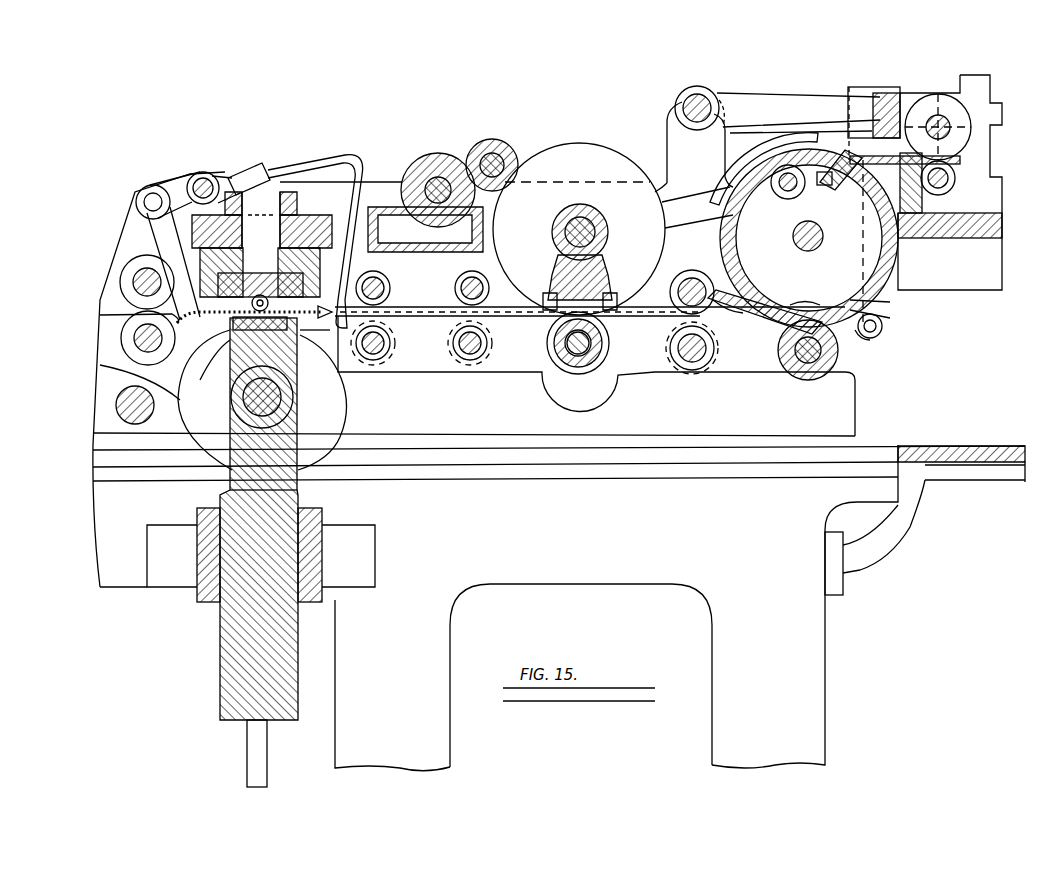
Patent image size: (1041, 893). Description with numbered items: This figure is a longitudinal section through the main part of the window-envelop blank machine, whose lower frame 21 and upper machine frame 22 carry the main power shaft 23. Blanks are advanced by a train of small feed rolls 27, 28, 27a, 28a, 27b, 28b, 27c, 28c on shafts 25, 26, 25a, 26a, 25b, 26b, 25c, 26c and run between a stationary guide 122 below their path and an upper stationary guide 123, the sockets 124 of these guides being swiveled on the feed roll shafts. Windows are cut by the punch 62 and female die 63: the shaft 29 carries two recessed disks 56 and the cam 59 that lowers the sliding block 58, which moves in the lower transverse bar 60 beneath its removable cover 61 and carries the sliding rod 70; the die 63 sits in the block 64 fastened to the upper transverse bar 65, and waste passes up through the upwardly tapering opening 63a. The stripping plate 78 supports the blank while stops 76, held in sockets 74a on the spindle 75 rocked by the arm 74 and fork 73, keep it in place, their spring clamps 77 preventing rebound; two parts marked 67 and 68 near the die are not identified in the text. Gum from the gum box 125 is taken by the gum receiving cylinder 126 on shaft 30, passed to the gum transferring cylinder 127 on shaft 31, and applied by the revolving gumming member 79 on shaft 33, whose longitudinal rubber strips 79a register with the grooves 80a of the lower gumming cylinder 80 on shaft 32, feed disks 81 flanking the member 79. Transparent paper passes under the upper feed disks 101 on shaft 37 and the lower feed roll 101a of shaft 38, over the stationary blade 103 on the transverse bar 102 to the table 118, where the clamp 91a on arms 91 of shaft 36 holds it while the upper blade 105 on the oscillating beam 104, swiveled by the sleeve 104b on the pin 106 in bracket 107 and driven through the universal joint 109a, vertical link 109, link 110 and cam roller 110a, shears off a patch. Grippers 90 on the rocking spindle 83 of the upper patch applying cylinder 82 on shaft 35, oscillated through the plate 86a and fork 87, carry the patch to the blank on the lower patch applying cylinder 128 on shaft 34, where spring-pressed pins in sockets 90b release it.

The lower frame 21 is at (692, 475).
The upper machine frame 22 is at (105, 373).
The main power shaft 23 is at (118, 408).
The feed roll shaft 25 is at (140, 280).
The feed roll shaft 26 is at (140, 335).
The feed roll 27 is at (138, 268).
The feed roll 28 is at (140, 323).
The punching mechanism shaft 29 is at (285, 395).
The gum receiving cylinder shaft 30 is at (425, 220).
The gum transferring cylinder shaft 31 is at (506, 155).
The lower gumming cylinder shaft 32 is at (555, 375).
The gumming member shaft 33 is at (598, 222).
The lower patch applying cylinder shaft 34 is at (866, 340).
The upper patch applying cylinder shaft 35 is at (820, 230).
The clamp shaft 36 is at (684, 106).
The upper feed disk shaft 37 is at (938, 134).
The lower feed roll shaft 38 is at (956, 178).
The recessed disks 56 is at (178, 380).
The sliding block 58 is at (232, 372).
The cam 59 is at (233, 412).
The lower transverse bar 60 is at (160, 568).
The removable vertical cover 61 is at (200, 512).
The punch 62 is at (230, 332).
The female die 63 is at (260, 285).
The opening 63a is at (261, 220).
The block 64 is at (196, 311).
The upper transverse bar 65 is at (305, 220).
The roller 67 is at (270, 303).
The plate 68 is at (250, 310).
The sliding rod 70 is at (248, 752).
The fork 73 is at (176, 237).
The arm 74 is at (162, 187).
The socket 74a is at (262, 163).
The spindle 75 is at (208, 174).
The stops 76 is at (322, 162).
The spring clamps 77 is at (314, 339).
The stripping plate 78 is at (147, 325).
The revolving gumming member 79 is at (603, 272).
The longitudinal rubber strips 79a is at (612, 300).
The lower gumming cylinder 80 is at (610, 343).
The longitudinal grooves 80a is at (552, 336).
The feed disks 81 is at (562, 148).
The upper patch applying cylinder 82 is at (897, 258).
The spindle 83 is at (786, 199).
The plate 86a is at (728, 165).
The fork 87 is at (688, 211).
The grippers 90 is at (786, 155).
The socket 90b is at (824, 186).
The arms 91 is at (752, 98).
The clamp 91a is at (801, 118).
The upper feed disks 101 is at (950, 156).
The lower feed roll 101a is at (954, 192).
The transverse bar 102 is at (942, 244).
The stationary blade 103 is at (942, 203).
The oscillating beam 104 is at (882, 92).
The sleeve 104b is at (842, 78).
The upper blade 105 is at (910, 95).
The pin 106 is at (990, 135).
The bracket 107 is at (990, 88).
The vertical link 109 is at (886, 306).
The universal joint 109a is at (858, 150).
The link 110 is at (745, 293).
The cam roller 110a is at (818, 302).
The table 118 is at (870, 200).
The stationary guide 122 is at (622, 395).
The upper stationary guide 123 is at (426, 311).
The sockets 124 is at (395, 280).
The gum box 125 is at (388, 242).
The gum receiving cylinder 126 is at (428, 160).
The gum transferring cylinder 127 is at (490, 148).
The lower patch applying cylinder 128 is at (840, 362).
The feed roll shaft 25a is at (390, 283).
The feed roll shaft 25b is at (488, 284).
The feed roll shaft 25c is at (680, 276).
The feed roll shaft 26a is at (380, 362).
The feed roll shaft 26b is at (465, 362).
The feed roll shaft 26c is at (685, 372).
The feed roll 27a is at (390, 294).
The feed roll 27b is at (490, 292).
The feed roll 27c is at (745, 280).
The feed roll 28a is at (372, 378).
The feed roll 28b is at (492, 352).
The feed roll 28c is at (716, 356).